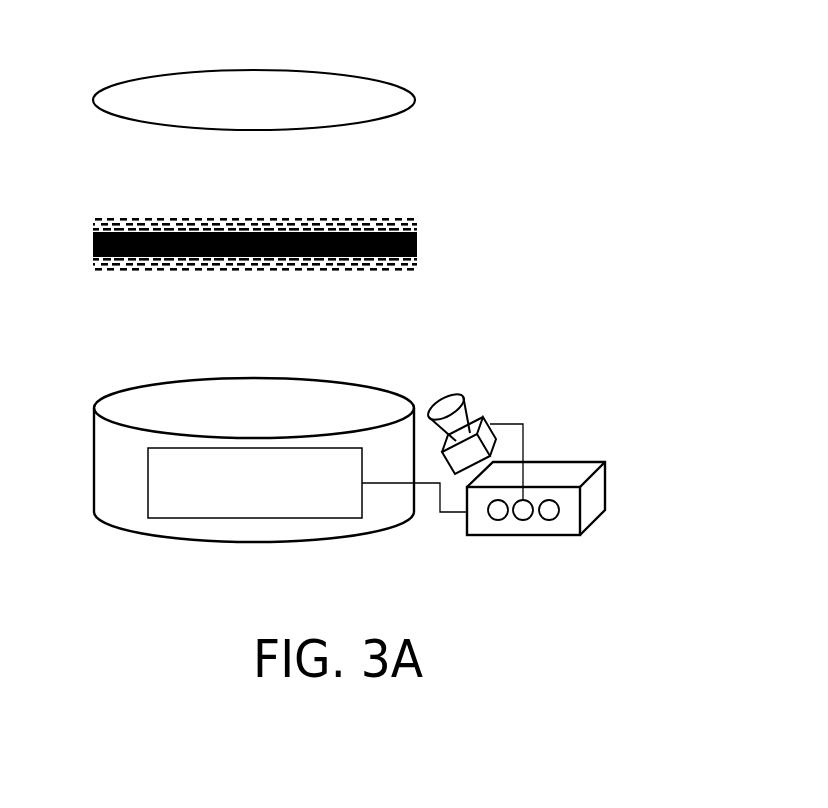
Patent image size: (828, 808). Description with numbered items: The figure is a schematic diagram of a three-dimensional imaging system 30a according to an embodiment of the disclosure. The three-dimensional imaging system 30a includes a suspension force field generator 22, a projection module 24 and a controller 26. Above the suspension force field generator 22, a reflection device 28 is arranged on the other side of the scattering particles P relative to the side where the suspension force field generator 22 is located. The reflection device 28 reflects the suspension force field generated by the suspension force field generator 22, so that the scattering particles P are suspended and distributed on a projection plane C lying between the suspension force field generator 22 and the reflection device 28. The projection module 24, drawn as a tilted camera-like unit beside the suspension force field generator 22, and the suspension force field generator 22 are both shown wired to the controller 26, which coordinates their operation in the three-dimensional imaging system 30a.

The reflection device 28 is at (202, 70).
The scattering particles P is at (130, 218).
The projection plane C is at (93, 245).
The suspension force field generator 22 is at (213, 518).
The projection module 24 is at (457, 395).
The controller 26 is at (605, 487).
The three-dimensional imaging system 30a is at (729, 597).